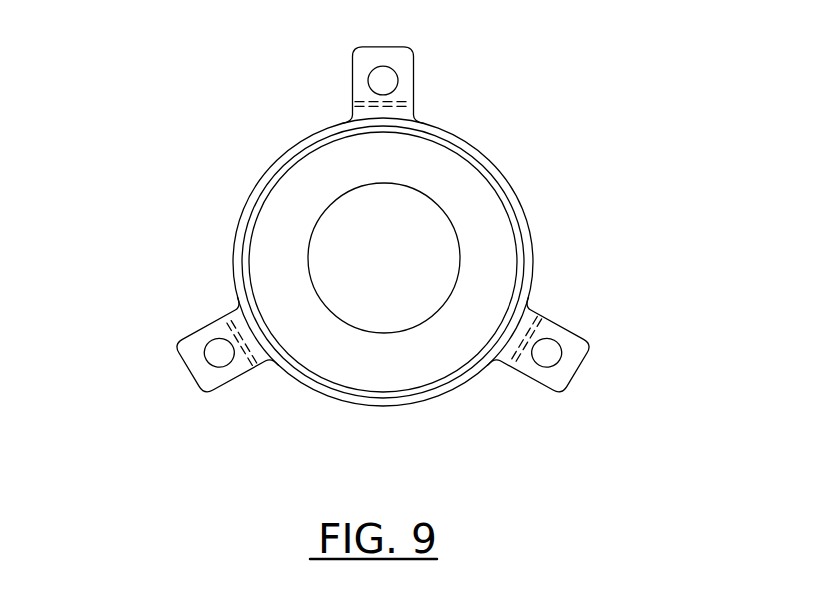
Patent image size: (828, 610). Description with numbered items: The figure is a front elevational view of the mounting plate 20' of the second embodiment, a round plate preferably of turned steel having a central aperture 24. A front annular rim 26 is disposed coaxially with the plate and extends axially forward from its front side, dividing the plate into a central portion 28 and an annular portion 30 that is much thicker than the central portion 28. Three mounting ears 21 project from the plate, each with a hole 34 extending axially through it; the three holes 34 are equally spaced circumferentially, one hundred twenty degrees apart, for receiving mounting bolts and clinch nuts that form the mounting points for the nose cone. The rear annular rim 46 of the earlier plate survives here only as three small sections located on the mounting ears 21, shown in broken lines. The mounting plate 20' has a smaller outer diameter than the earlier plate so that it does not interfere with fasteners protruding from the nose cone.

The mounting plate 20' is at (424, 262).
The mounting ear 21 is at (401, 42).
The rear annular rim 46 is at (413, 80).
The front annular rim 26 is at (283, 170).
The central portion 28 is at (458, 358).
The central aperture 24 is at (425, 277).
The annular portion 30 is at (523, 303).
The hole 34 is at (215, 355).